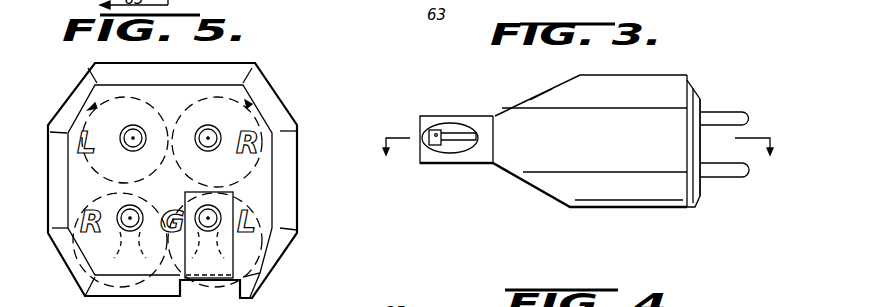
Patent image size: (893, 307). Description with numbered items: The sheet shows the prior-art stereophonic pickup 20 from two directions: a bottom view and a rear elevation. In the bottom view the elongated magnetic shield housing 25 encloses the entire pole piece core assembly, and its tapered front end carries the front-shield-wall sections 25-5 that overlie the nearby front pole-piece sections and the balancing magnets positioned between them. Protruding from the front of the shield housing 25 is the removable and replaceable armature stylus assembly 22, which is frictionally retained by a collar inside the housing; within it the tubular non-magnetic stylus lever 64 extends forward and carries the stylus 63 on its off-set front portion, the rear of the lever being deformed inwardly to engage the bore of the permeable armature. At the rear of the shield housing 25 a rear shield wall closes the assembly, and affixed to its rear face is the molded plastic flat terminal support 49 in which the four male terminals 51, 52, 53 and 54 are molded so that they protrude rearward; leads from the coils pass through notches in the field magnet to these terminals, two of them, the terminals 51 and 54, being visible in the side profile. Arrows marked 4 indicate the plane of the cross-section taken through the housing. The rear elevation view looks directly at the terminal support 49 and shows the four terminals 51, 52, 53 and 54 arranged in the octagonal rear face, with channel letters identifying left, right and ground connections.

In FIG. 3, the section line 4- 4 is at (577, 158).
In FIG. 3, the stereophonic pickup 20 is at (565, 209).
In FIG. 3, the armature stylus assembly 22 is at (476, 95).
In FIG. 3, the shield housing 25 is at (614, 152).
In FIG. 3, the front shield wall section 25-5 is at (555, 92).
In FIG. 5, the terminal support 49 is at (47, 202).
In FIG. 3, the terminal support 49 is at (700, 95).
In FIG. 5, the male terminal 51 is at (142, 125).
In FIG. 3, the male terminal 51 is at (722, 110).
In FIG. 5, the male terminal 52 is at (211, 125).
In FIG. 5, the male terminal 53 is at (209, 235).
In FIG. 5, the male terminal 54 is at (130, 233).
In FIG. 3, the male terminal 54 is at (724, 189).
In FIG. 3, the stylus 63 is at (436, 140).
In FIG. 3, the stylus lever 64 is at (463, 150).